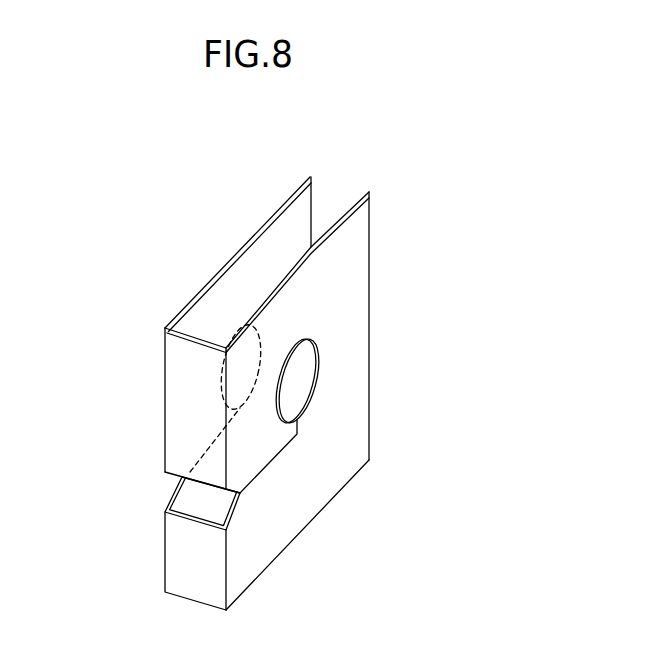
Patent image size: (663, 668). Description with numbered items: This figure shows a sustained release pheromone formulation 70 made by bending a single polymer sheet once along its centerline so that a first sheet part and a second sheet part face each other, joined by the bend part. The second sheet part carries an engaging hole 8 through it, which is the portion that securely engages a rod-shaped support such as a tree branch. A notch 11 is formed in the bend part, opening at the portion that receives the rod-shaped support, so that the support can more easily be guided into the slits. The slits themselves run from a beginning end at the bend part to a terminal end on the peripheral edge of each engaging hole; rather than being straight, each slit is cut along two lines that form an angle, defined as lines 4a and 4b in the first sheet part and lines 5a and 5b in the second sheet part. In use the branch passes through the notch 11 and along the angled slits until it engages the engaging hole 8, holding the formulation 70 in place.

The sustained release pheromone formulation 70 is at (260, 369).
The engaging hole 8 is at (302, 370).
The line of slit 5a is at (273, 466).
The line of slit 5b is at (297, 423).
The line of slit 4a is at (207, 453).
The line of slit 4b is at (237, 418).
The notch 11 is at (188, 497).